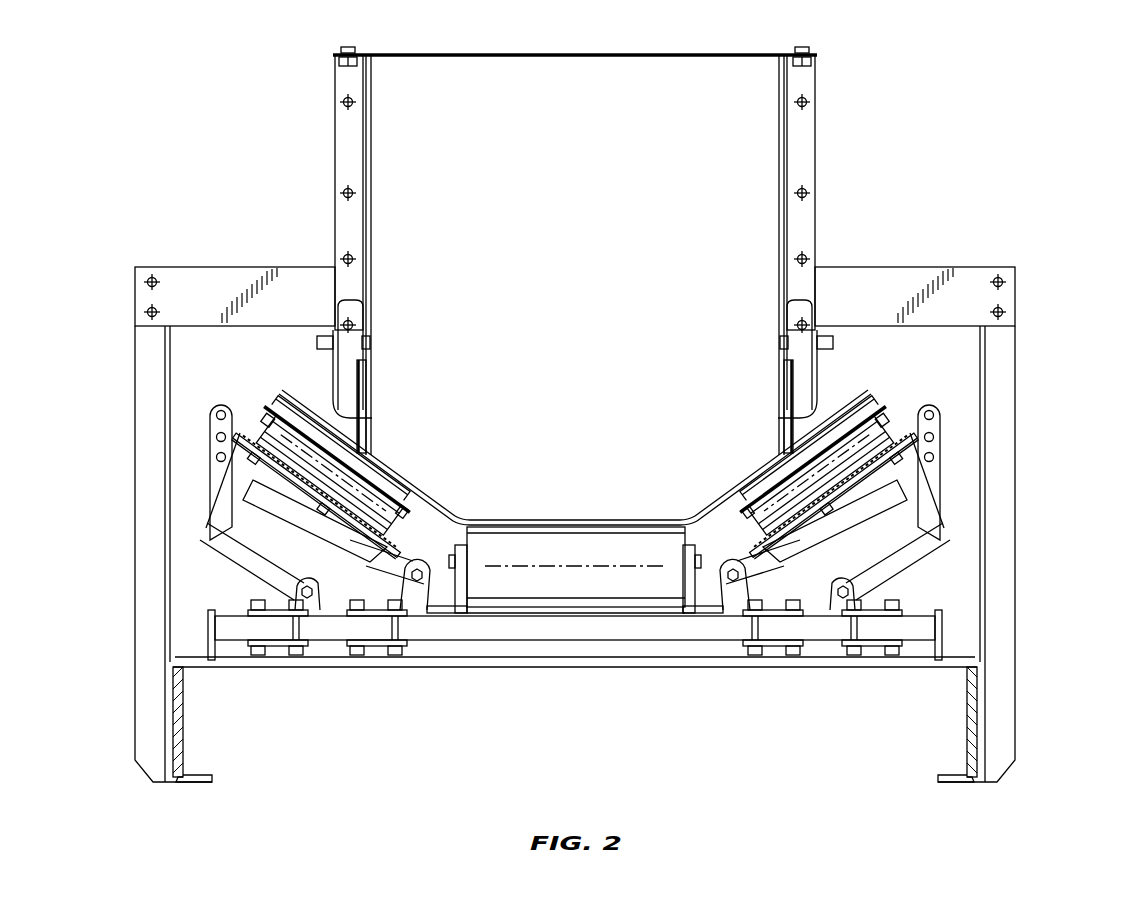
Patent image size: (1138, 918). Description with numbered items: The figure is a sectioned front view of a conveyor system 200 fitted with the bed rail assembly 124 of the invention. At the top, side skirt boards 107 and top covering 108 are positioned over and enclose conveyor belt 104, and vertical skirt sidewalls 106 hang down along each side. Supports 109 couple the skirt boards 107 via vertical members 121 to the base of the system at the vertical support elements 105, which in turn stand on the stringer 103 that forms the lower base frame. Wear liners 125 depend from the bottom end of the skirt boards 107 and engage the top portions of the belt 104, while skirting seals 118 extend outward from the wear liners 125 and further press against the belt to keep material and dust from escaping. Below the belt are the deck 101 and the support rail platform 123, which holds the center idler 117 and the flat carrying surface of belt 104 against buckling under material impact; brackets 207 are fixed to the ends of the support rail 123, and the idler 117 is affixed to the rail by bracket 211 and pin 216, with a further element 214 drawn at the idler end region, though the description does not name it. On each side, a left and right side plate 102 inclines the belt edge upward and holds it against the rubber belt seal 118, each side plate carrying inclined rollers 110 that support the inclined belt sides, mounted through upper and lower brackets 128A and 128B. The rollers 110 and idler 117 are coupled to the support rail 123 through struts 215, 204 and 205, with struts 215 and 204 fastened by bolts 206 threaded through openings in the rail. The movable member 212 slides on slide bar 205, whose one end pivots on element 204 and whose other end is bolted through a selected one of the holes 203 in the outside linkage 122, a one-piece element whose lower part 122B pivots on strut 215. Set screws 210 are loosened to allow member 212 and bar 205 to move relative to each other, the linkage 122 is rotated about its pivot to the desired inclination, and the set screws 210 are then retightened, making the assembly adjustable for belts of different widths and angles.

The deck 101 is at (574, 668).
The side plate 102 is at (312, 542).
The stringer 103 is at (200, 763).
The conveyor belt 104 is at (650, 520).
The vertical support element 105 is at (160, 711).
The vertical skirt sidewall 106 is at (373, 216).
The top hood 107 is at (447, 58).
The hood cover 108 is at (403, 53).
The horizontal skirt wall support 109 is at (205, 275).
The inclined roller 110 is at (385, 449).
The center idler 117 is at (630, 592).
The rubber belt seal 118 is at (322, 408).
The vertical support 121 is at (345, 132).
The outside linkage 122 is at (230, 478).
The lower part of outside linkage 122B is at (215, 542).
The support rail 123 is at (540, 620).
The bed rail assembly 124 is at (233, 363).
The wear liner 125 is at (378, 393).
The upper bracket 128A is at (268, 428).
The lower bracket 128B is at (345, 520).
The conveyor system 200 is at (974, 66).
The hole 203 is at (208, 412).
The strut 204 is at (397, 592).
The slide bar 205 is at (400, 545).
The bolt 206 is at (279, 652).
The bracket 207 is at (210, 630).
The set screw 210 is at (245, 503).
The bolt 211 is at (215, 437).
The movable member 212 is at (405, 472).
The end bracket 214 is at (460, 615).
The strut 215 is at (293, 597).
The pin 216 is at (447, 613).